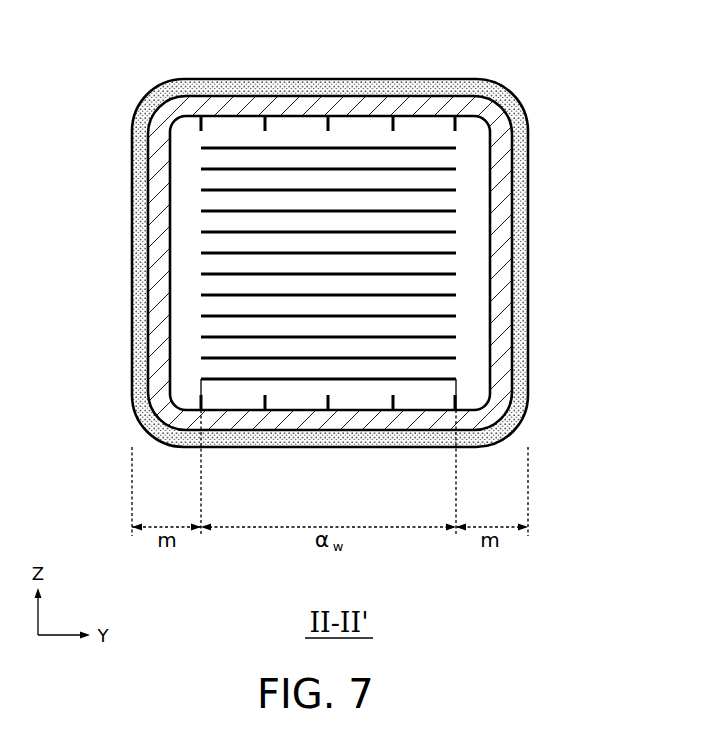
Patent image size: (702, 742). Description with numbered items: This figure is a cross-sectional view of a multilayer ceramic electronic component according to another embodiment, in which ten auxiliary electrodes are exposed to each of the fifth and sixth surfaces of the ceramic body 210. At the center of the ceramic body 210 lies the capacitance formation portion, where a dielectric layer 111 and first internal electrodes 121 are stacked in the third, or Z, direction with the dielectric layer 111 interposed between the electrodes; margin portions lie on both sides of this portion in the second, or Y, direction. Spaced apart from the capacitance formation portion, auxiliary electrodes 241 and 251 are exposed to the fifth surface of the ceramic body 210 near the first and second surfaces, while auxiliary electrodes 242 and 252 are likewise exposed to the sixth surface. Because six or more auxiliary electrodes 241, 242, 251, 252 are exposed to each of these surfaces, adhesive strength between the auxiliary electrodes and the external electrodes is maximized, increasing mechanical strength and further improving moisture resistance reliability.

The dielectric layer 111 is at (440, 222).
The first internal electrode 121 is at (455, 266).
The ceramic body 210 is at (400, 112).
The auxiliary electrode 241 is at (218, 113).
The auxiliary electrode 242 is at (200, 407).
The auxiliary electrode 251 is at (390, 118).
The auxiliary electrode 252 is at (393, 409).